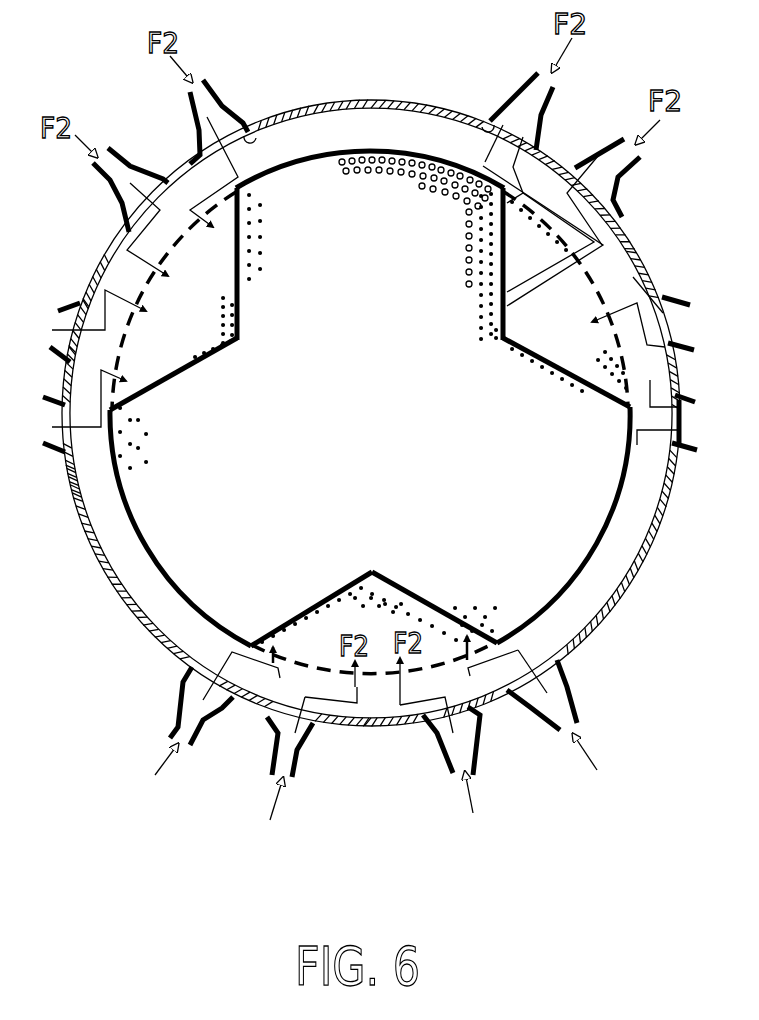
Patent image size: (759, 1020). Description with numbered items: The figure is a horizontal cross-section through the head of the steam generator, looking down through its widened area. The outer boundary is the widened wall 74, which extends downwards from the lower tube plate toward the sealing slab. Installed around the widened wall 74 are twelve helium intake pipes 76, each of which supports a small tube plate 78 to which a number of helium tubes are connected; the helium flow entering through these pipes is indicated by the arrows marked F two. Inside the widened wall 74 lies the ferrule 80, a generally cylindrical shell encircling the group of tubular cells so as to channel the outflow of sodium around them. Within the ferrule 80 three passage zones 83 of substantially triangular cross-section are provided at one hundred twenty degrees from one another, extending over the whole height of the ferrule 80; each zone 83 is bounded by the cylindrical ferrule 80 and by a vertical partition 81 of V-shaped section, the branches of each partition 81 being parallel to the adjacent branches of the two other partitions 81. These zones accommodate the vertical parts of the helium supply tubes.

The widened wall 74 is at (600, 617).
The helium intake pipes 76 is at (190, 105).
The small tube plates 78 is at (254, 132).
The ferrule 80 is at (163, 577).
The vertical partitions 81 is at (238, 280).
The passage zones 83 is at (195, 345).